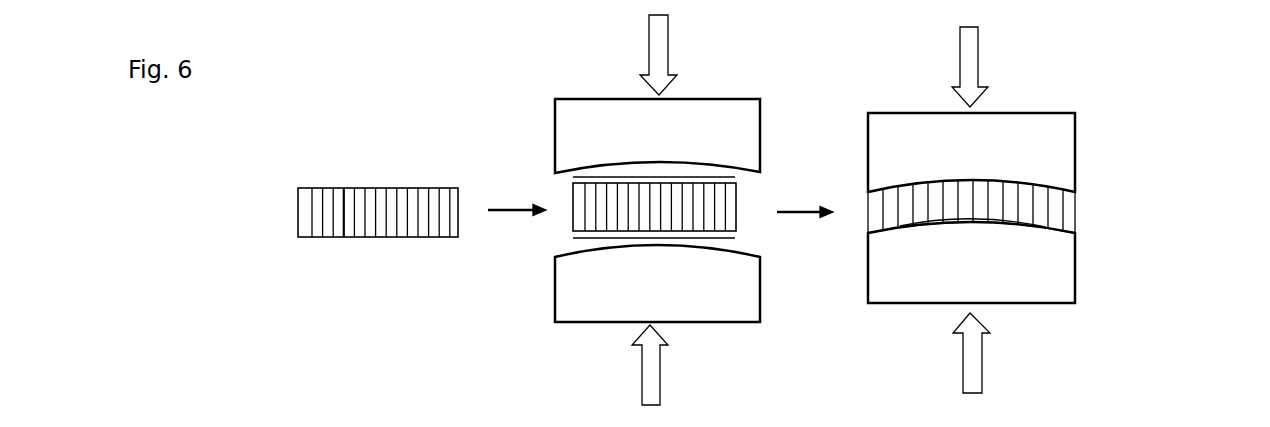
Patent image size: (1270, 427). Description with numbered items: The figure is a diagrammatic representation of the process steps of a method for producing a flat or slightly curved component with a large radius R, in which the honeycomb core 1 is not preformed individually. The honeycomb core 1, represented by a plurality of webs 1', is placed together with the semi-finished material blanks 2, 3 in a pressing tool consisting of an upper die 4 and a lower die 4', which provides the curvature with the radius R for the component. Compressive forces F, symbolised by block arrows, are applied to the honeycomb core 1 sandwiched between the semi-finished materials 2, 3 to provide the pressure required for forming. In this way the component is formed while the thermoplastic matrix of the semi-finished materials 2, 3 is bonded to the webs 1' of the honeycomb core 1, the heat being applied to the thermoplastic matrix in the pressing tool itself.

The honeycomb core 1 is at (708, 249).
The webs 1' is at (326, 203).
The semi-finished material blank 2 is at (668, 177).
The semi-finished material blank 3 is at (595, 240).
The lower die 4' is at (842, 145).
The upper die 4 is at (828, 277).
The radius R is at (988, 228).
The compressive forces F is at (662, 52).